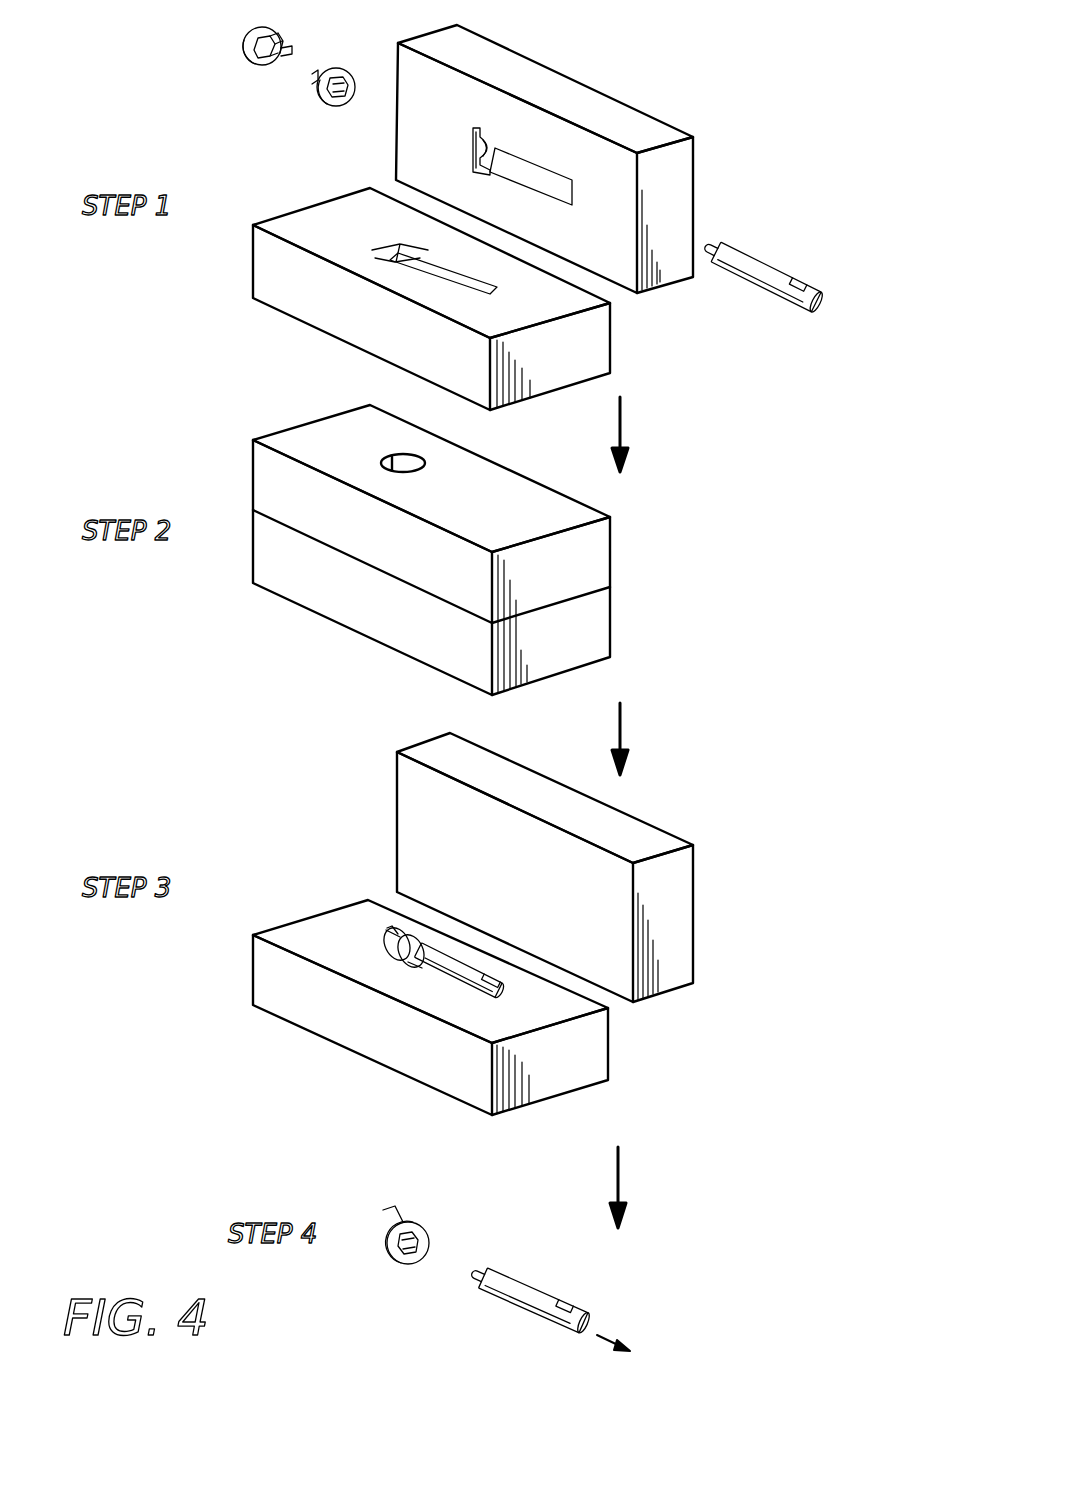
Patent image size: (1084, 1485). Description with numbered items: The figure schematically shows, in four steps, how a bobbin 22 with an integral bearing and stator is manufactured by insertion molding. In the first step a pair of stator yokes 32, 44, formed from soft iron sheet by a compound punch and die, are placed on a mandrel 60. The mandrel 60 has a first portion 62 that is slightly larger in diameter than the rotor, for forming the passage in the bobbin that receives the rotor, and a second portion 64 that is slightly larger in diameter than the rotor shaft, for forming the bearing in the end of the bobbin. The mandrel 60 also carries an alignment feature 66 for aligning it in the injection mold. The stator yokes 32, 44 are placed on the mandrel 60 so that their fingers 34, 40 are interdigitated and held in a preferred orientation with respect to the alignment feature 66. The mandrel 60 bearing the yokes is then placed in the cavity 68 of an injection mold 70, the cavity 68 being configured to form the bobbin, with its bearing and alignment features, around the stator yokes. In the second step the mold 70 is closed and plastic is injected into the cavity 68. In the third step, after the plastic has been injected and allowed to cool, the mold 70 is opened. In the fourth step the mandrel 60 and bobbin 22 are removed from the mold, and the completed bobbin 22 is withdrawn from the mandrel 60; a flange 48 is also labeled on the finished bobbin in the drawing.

The bobbin 22 is at (376, 1058).
The stator yoke 32 is at (273, 40).
The finger 34 is at (292, 50).
The finger 40 is at (314, 74).
The stator yoke 44 is at (320, 113).
The flange 48 is at (390, 930).
The mandrel 60 is at (613, 755).
The first portion 62 is at (766, 277).
The second portion 64 is at (710, 249).
The alignment feature 66 is at (797, 284).
The cavity 68 is at (500, 155).
The injection mold 70 is at (657, 270).